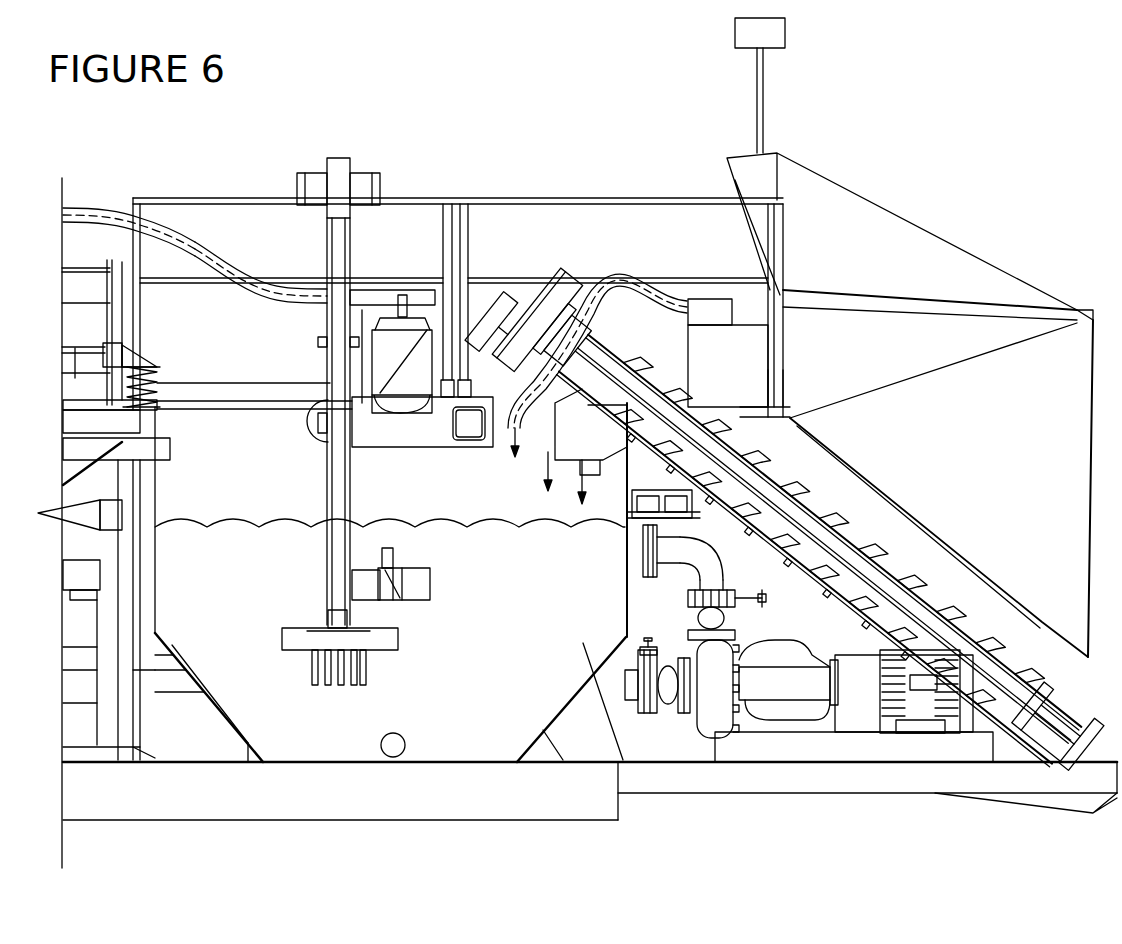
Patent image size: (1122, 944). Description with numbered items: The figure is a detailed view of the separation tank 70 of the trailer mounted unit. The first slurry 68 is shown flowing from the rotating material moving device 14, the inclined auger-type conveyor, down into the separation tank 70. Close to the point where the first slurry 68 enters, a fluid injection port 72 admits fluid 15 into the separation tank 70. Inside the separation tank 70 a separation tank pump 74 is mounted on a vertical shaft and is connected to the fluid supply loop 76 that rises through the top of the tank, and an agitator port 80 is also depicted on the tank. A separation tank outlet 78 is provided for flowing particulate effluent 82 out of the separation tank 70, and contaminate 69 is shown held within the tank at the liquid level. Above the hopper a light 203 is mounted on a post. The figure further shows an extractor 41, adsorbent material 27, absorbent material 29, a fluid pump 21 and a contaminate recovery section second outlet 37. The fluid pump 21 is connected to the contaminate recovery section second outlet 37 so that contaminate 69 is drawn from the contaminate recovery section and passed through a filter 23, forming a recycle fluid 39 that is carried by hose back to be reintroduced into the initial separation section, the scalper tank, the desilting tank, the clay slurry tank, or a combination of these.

The rotating material moving device 14 is at (814, 490).
The fluid 15 is at (549, 463).
The fluid pump 21 is at (750, 350).
The filter 23 is at (707, 300).
The adsorbent material 27 is at (655, 512).
The absorbent material 29 is at (687, 508).
The contaminate recovery section second outlet 37 is at (783, 391).
The recycle fluid 39 is at (624, 277).
The extractor 41 is at (648, 497).
The first slurry 68 is at (586, 476).
The contaminate 69 is at (210, 528).
The separation tank 70 is at (215, 430).
The fluid injection port 72 is at (528, 455).
The separation tank pump 74 is at (305, 628).
The fluid supply loop 76 is at (325, 505).
The separation tank outlet 78 is at (227, 262).
The agitator port 80 is at (430, 587).
The particulate effluent 82 is at (97, 217).
The light 203 is at (773, 33).